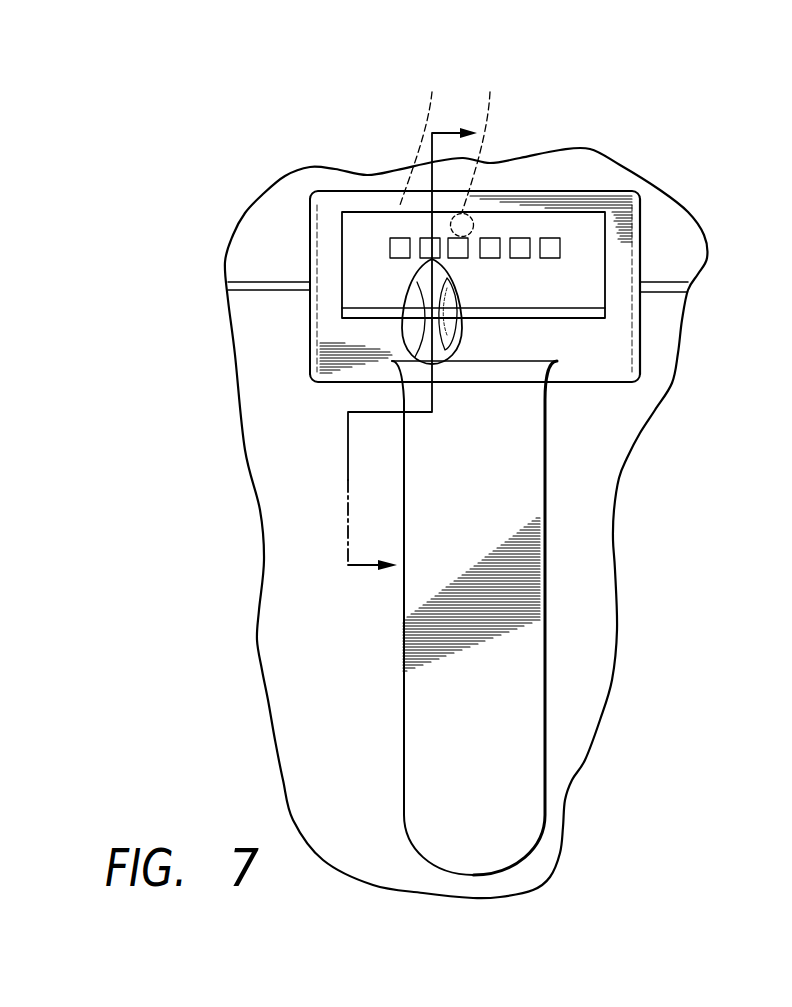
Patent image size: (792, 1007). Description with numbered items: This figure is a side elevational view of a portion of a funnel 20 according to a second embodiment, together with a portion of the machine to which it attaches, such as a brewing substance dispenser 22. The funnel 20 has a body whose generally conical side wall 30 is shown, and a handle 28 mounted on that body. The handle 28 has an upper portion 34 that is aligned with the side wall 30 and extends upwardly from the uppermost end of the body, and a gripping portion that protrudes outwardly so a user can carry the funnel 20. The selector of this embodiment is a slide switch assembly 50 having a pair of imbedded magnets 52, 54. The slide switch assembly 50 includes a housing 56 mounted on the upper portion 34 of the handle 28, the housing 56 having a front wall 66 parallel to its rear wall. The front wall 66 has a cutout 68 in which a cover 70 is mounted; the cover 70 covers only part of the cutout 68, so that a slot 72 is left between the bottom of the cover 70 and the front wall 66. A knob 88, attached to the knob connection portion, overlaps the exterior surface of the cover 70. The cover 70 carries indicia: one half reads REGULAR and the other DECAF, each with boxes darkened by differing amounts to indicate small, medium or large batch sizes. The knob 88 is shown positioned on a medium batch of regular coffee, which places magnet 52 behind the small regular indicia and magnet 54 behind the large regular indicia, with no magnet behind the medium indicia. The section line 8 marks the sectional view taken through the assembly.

The section line 8- 8 is at (412, 359).
The funnel 20 is at (583, 705).
The brewing substance dispenser 22 is at (280, 203).
The handle 28 is at (437, 668).
The side wall 30 is at (585, 577).
The upper portion 34 is at (640, 267).
The slide switch assembly 50 is at (647, 185).
The magnet 52 is at (426, 137).
The magnet 54 is at (480, 153).
The housing 56 is at (308, 330).
The front wall 66 is at (613, 337).
The cutout 68 is at (612, 250).
The cover 70 is at (587, 212).
The slot 72 is at (565, 312).
The knob 88 is at (445, 345).